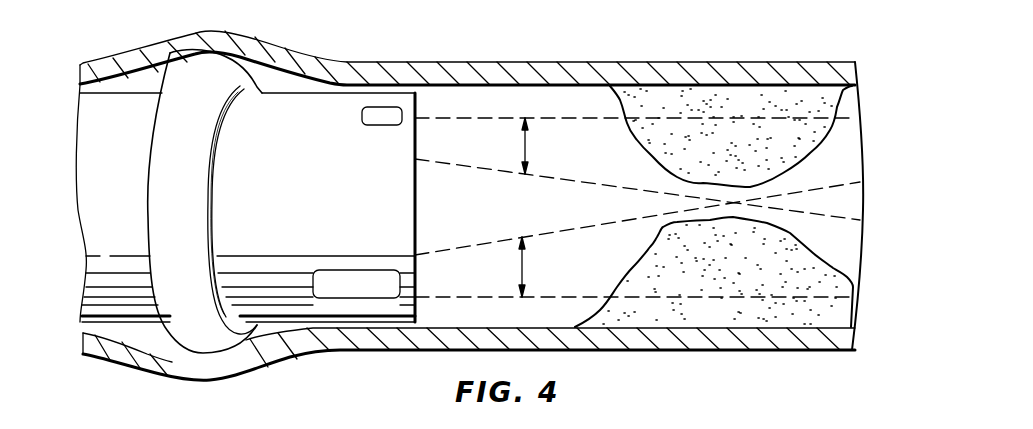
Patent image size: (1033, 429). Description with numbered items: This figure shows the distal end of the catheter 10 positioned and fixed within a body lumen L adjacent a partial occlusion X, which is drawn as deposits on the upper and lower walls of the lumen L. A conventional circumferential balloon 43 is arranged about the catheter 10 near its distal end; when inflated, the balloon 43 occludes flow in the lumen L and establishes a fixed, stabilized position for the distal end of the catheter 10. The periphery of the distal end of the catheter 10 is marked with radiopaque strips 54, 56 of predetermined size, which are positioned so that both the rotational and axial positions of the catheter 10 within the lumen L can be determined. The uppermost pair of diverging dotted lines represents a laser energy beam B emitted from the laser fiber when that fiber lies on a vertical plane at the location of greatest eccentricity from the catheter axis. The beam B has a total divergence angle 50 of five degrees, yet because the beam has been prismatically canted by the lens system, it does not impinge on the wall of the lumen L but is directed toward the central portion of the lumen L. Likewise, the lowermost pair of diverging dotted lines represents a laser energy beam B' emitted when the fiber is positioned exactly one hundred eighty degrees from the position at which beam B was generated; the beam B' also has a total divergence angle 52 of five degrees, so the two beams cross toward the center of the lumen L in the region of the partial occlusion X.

The lumen L is at (319, 64).
The catheter 10 is at (290, 203).
The circumferential balloon 43 is at (187, 237).
The radiopaque strip 54 is at (368, 127).
The radiopaque strip 56 is at (349, 278).
The total divergence angle 50 is at (525, 146).
The total divergence angle 52 is at (522, 268).
The laser energy beam B is at (637, 169).
The laser energy beam B' is at (637, 239).
The partial occlusion X is at (734, 153).